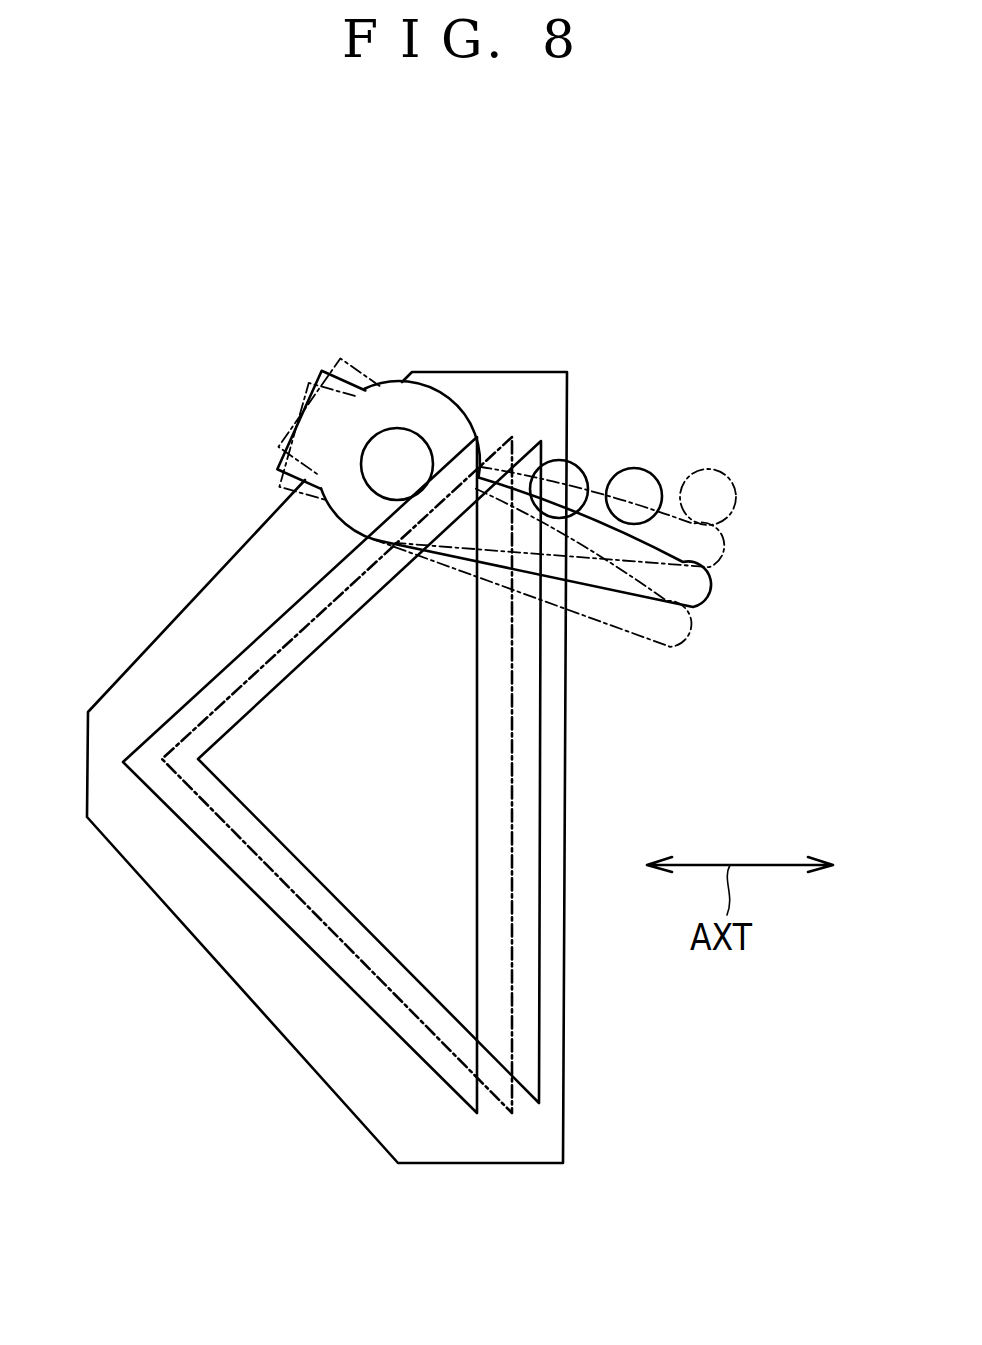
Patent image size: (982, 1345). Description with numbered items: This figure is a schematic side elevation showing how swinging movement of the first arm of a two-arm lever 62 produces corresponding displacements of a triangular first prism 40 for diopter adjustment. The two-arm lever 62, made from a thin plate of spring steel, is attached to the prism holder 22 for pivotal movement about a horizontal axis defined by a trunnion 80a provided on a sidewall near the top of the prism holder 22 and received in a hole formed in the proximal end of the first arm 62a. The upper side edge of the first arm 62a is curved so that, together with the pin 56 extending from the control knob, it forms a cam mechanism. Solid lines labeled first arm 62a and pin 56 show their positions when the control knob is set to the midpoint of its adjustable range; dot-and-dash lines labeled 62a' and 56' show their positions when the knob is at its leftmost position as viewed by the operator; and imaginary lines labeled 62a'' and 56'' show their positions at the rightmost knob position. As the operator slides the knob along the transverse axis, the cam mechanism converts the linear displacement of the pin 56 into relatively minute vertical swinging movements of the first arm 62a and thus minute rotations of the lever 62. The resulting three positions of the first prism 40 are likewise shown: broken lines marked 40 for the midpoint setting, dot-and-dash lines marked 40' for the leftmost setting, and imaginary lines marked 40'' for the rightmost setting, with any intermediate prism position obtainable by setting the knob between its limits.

The prism holder 22 is at (342, 1087).
The first prism 40 is at (299, 775).
The first prism (leftmost-knob position) 40' is at (261, 775).
The first prism (rightmost-knob position) 40'' is at (351, 772).
The pin 56 is at (661, 443).
The pin (leftmost-knob position) 56' is at (585, 437).
The pin (rightmost-knob position) 56'' is at (756, 443).
The two-arm lever 62 is at (462, 408).
The first arm 62a is at (612, 574).
The first arm (leftmost-knob position) 62a' is at (555, 602).
The first arm (rightmost-knob position) 62a'' is at (630, 521).
The trunnion 80a is at (397, 447).